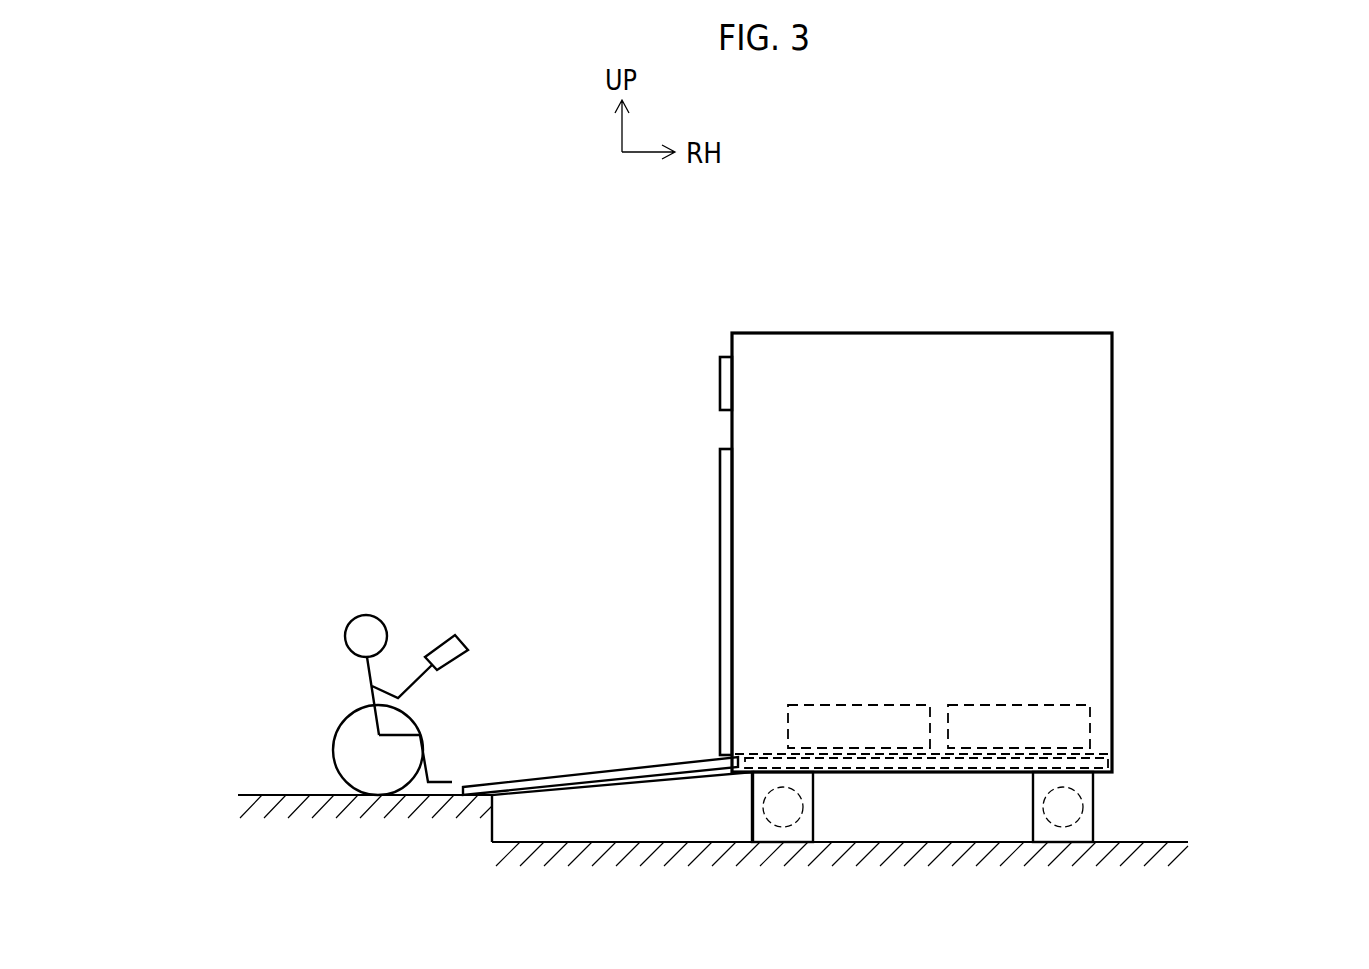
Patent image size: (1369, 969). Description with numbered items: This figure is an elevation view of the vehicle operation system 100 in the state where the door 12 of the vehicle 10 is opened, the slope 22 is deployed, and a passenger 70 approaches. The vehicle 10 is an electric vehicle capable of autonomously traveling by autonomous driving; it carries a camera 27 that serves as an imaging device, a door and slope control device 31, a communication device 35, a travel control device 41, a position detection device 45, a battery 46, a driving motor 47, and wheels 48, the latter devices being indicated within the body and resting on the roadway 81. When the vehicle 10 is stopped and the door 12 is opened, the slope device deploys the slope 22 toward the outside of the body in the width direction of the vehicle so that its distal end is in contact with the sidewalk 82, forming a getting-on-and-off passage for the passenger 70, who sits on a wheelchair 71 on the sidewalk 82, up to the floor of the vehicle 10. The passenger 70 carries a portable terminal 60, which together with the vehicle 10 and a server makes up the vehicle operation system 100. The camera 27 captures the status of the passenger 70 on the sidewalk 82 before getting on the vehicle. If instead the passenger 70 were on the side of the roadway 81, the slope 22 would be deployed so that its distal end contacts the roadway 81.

The vehicle operation system 100 is at (397, 218).
The vehicle 10 is at (1098, 333).
The door 12 is at (720, 450).
The slope 22 is at (640, 778).
The camera 27 is at (720, 370).
The door and slope control device 31 is at (1140, 673).
The communication device 35 is at (1065, 703).
The travel control device 41 is at (1038, 643).
The position detection device 45 is at (910, 703).
The battery 46 is at (1117, 760).
The driving motor 47 is at (1097, 782).
The wheels 48 is at (1095, 823).
The portable terminal 60 is at (440, 643).
The passenger 70 is at (367, 697).
The wheelchair 71 is at (332, 753).
The roadway 81 is at (1168, 842).
The sidewalk 82 is at (278, 795).